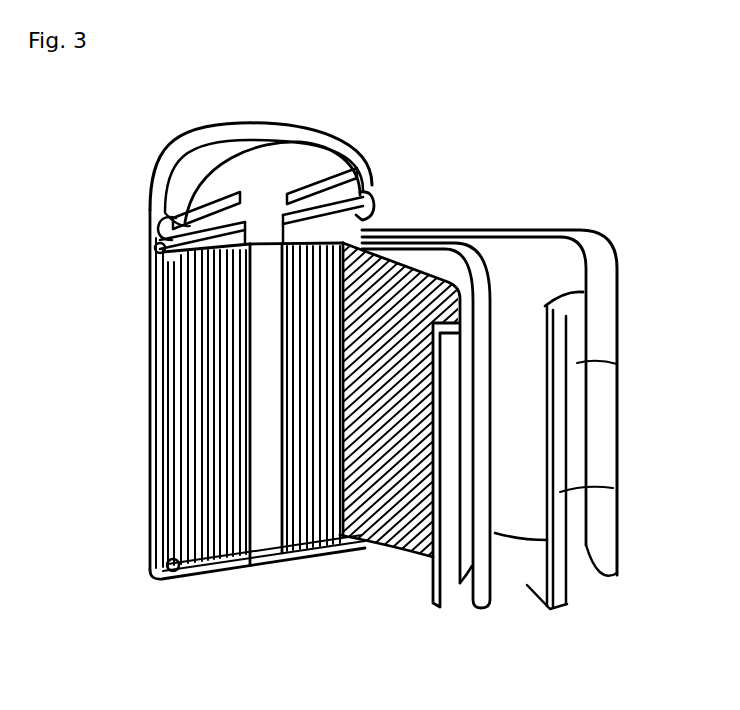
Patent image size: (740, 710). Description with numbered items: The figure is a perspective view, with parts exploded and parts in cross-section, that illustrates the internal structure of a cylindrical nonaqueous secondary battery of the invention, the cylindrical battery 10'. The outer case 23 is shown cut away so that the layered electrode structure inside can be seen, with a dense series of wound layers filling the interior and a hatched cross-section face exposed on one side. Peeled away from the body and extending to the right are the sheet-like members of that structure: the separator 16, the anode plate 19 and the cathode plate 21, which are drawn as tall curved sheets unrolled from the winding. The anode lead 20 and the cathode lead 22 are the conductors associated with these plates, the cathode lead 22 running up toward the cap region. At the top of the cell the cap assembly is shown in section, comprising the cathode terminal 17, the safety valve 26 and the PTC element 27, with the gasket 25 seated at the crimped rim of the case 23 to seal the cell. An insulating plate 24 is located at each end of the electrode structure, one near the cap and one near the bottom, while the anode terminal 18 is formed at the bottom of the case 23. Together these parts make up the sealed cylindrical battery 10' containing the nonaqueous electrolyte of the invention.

The cylindrical battery 10' is at (381, 366).
The separator 16 is at (483, 277).
The cathode terminal 17 is at (228, 178).
The anode terminal 18 is at (211, 584).
The anode plate 19 is at (578, 366).
The anode lead 20 is at (565, 490).
The cathode plate 21 is at (449, 586).
The cathode lead 22 is at (373, 210).
The case 23 is at (150, 408).
The insulating plate 24 is at (150, 258).
The gasket 25 is at (158, 183).
The safety valve 26 is at (257, 203).
The PTC element 27 is at (317, 173).